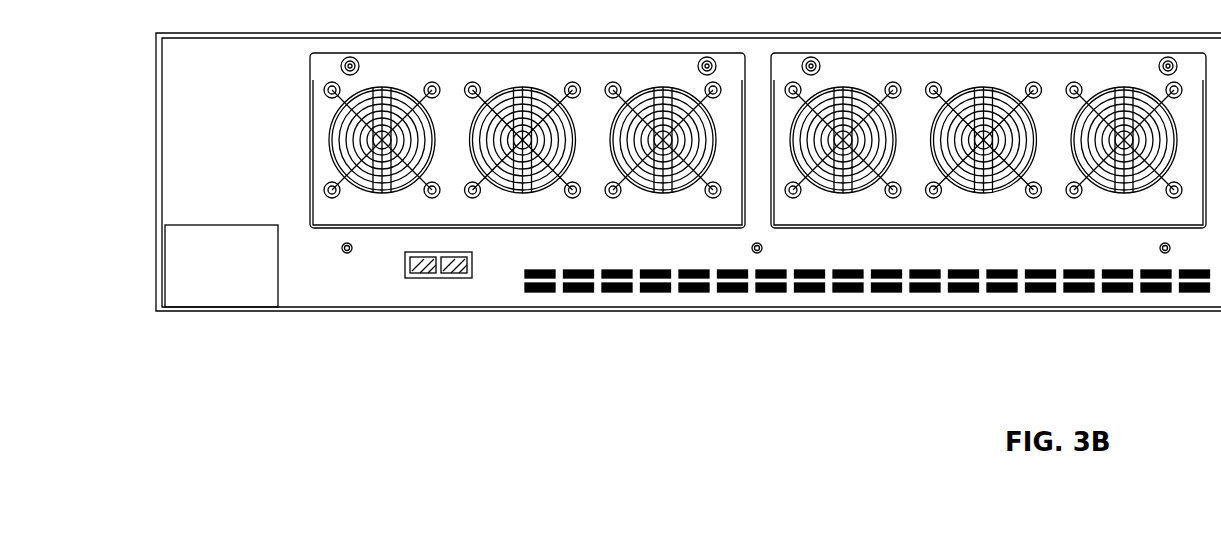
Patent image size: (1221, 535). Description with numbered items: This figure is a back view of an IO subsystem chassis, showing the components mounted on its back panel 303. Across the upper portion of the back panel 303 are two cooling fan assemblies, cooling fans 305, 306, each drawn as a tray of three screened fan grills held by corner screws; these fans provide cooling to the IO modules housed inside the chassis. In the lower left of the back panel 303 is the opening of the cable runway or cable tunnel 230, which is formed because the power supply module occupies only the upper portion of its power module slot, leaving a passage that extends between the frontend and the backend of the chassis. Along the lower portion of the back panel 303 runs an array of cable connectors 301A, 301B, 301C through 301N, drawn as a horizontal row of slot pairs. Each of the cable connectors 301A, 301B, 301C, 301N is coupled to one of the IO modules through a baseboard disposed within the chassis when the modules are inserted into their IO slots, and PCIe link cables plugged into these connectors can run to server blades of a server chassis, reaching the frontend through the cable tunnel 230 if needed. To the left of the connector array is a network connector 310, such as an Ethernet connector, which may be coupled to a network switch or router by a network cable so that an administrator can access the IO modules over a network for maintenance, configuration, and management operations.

The back panel 303 is at (237, 133).
The cable runway or cable tunnel 230 is at (236, 271).
The cooling fan 305 is at (389, 220).
The cooling fan 306 is at (849, 220).
The network connector 310 is at (438, 280).
The cable connector 301A is at (526, 294).
The cable connector 301B is at (586, 294).
The cable connector 301C is at (616, 294).
The cable connector 301N is at (1187, 294).